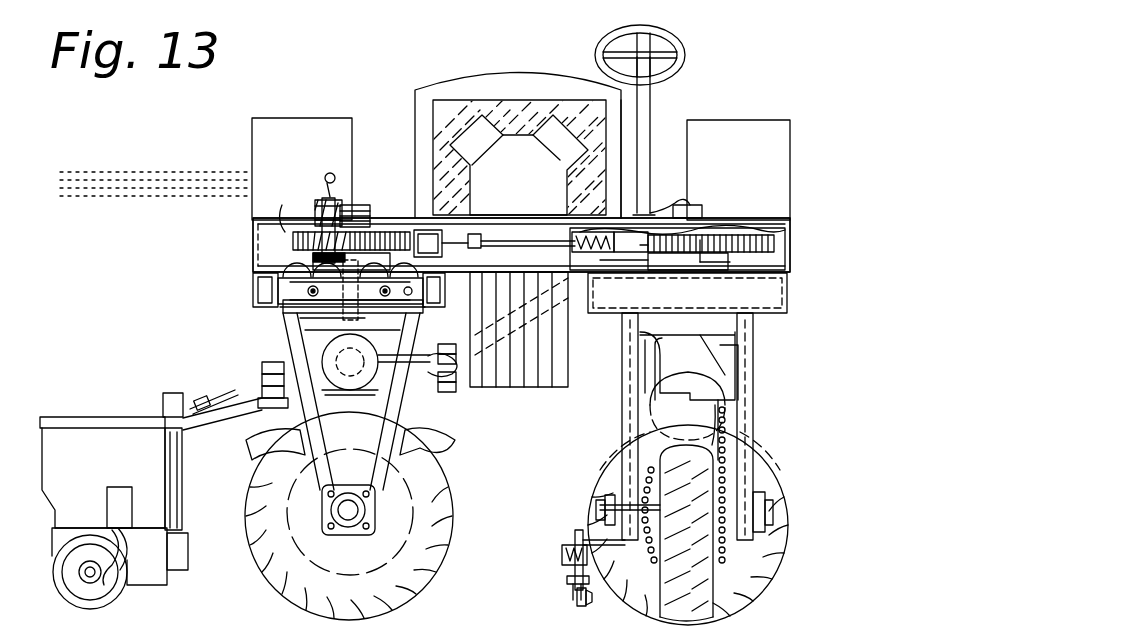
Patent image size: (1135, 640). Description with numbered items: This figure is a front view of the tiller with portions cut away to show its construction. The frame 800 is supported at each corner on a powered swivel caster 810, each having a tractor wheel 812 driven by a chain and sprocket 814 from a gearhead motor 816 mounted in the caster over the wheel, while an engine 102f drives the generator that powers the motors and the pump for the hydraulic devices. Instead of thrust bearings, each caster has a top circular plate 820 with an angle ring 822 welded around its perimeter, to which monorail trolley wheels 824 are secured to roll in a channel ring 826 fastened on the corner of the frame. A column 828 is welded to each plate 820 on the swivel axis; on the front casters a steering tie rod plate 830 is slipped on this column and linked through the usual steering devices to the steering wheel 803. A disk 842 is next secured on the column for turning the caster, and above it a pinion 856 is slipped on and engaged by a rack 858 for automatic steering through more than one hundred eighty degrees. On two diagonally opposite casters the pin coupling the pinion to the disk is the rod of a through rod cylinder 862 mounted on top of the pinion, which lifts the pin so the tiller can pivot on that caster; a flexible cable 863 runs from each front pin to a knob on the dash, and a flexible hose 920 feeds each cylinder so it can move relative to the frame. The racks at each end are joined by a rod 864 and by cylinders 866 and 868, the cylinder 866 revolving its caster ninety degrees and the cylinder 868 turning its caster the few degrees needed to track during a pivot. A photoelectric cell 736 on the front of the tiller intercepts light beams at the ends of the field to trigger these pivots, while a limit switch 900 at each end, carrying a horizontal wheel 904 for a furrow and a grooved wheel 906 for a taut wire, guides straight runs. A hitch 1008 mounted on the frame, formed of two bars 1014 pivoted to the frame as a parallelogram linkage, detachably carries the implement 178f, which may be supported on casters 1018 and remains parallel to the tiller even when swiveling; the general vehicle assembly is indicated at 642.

The vehicle frame 642 is at (46, 152).
The flexible hose 920 is at (302, 175).
The flexible cable 863 is at (333, 143).
The through rod cylinder 862 is at (327, 197).
The column 828 is at (357, 205).
The pinion 856 is at (387, 234).
The disk 842 is at (650, 258).
The rack 858 is at (256, 230).
The steering tie rod plate 830 is at (385, 262).
The cylinder 868 is at (473, 250).
The rod 864 is at (543, 250).
The cylinder 866 is at (585, 253).
The frame 800 is at (253, 253).
The monorail trolley wheels 824 is at (253, 292).
The channel ring 826 is at (256, 280).
The angle ring 822 is at (258, 303).
The top circular plate 820 is at (280, 312).
The gearhead motor 816 is at (322, 362).
The bars 1014 is at (263, 385).
The hitch 1008 is at (447, 392).
The photoelectric cell 736 is at (513, 390).
The powered swivel caster 810 is at (624, 412).
The chain and sprocket 814 is at (735, 447).
The tractor wheel 812 is at (448, 510).
The limit switch 900 is at (570, 572).
The horizontal wheel 904 is at (572, 592).
The grooved wheel 906 is at (584, 604).
The implement 178f is at (120, 417).
The casters 1018 is at (114, 598).
The engine 102f is at (483, 115).
The steering wheel 803 is at (686, 57).